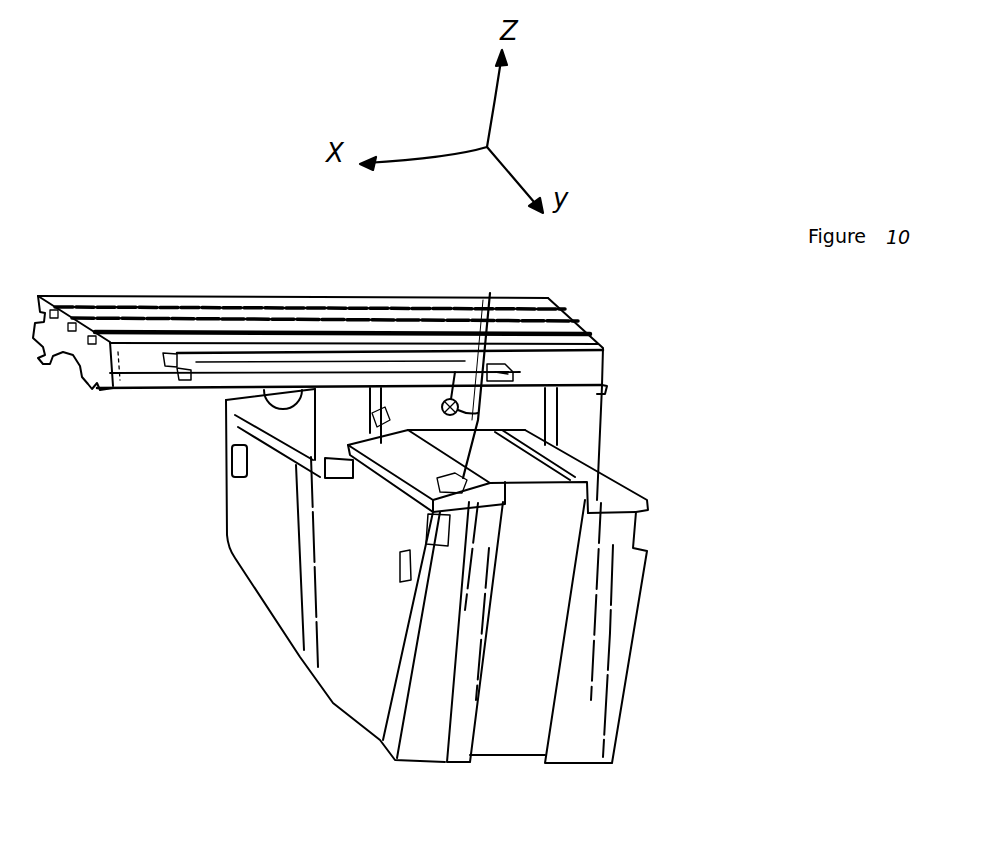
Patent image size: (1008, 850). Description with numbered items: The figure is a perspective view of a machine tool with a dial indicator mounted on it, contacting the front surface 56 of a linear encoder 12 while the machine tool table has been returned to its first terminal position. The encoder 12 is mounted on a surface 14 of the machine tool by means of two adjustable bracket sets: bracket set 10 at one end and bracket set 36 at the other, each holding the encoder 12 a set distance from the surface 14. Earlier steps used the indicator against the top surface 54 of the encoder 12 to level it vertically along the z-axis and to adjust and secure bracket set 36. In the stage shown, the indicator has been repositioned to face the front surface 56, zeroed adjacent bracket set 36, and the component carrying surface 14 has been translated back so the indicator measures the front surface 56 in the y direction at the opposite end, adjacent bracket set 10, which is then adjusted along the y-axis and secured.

The bracket set 10 is at (572, 370).
The linear encoder 12 is at (512, 368).
The surface 14 is at (570, 369).
The bracket set 36 is at (184, 385).
The top surface 54 is at (203, 357).
The front surface 56 is at (413, 373).